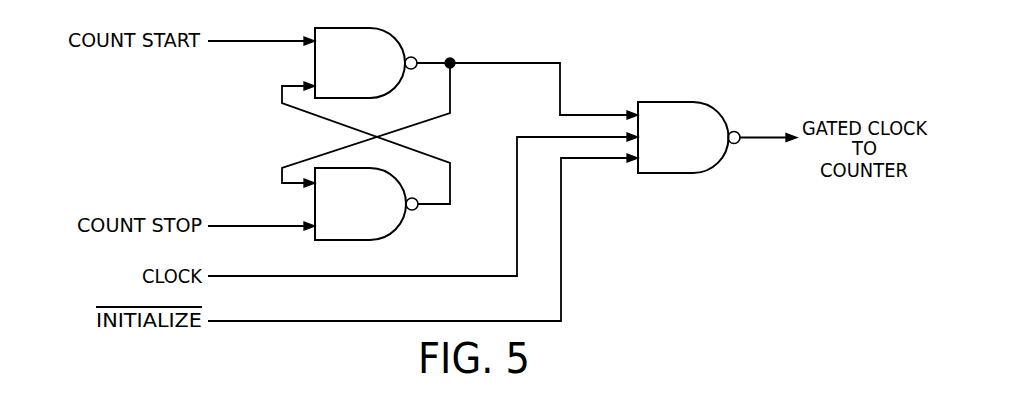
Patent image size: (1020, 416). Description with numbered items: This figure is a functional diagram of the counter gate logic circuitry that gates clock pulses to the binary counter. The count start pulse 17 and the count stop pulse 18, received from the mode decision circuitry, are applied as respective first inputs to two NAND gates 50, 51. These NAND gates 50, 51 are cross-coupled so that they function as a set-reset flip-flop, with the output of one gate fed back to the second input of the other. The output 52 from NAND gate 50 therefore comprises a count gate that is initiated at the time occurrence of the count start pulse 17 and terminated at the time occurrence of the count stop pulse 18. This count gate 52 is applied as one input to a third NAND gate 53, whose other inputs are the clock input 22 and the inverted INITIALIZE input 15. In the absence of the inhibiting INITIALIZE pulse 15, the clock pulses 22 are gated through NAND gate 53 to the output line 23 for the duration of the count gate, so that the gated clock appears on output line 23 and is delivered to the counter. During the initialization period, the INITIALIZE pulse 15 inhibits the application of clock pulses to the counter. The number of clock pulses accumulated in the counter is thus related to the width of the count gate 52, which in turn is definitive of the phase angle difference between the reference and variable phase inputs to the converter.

The INITIALIZE input 15 is at (267, 321).
The count start pulse 17 is at (258, 40).
The count stop pulse 18 is at (259, 226).
The clock input 22 is at (266, 276).
The output line 23 is at (756, 139).
The NAND gate 50 is at (393, 38).
The NAND gate 51 is at (392, 232).
The output of NAND gate 50 52 is at (545, 63).
The NAND gate 53 is at (663, 102).